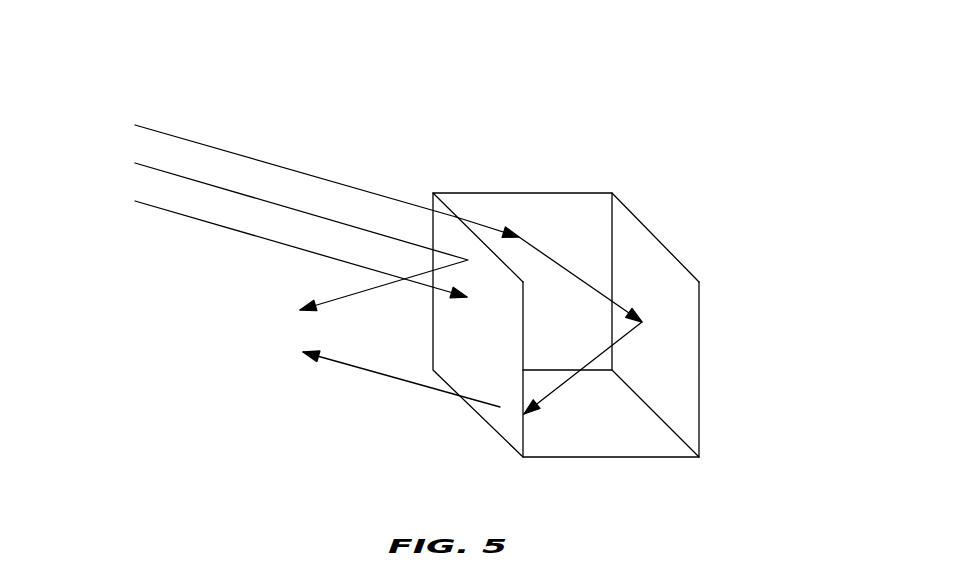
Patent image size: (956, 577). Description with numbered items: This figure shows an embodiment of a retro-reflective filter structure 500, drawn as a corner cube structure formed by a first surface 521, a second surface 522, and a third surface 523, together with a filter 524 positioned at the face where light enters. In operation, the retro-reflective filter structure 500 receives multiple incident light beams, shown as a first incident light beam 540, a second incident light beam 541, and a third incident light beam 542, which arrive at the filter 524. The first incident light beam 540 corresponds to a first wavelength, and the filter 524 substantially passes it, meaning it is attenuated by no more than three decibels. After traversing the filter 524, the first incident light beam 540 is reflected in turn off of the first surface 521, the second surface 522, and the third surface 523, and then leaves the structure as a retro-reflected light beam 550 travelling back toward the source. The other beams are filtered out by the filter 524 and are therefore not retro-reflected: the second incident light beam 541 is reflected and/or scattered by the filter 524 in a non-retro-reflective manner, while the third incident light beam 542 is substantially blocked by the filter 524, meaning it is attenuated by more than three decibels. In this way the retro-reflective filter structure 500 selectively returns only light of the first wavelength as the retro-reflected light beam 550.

The retro-reflective filter structure 500 is at (618, 328).
The first surface 521 is at (560, 192).
The second surface 522 is at (700, 372).
The third surface 523 is at (625, 458).
The filter 524 is at (524, 337).
The first incident light beam 540 is at (200, 143).
The second incident light beam 541 is at (242, 195).
The third incident light beam 542 is at (187, 218).
The retro-reflected light beam 550 is at (413, 382).